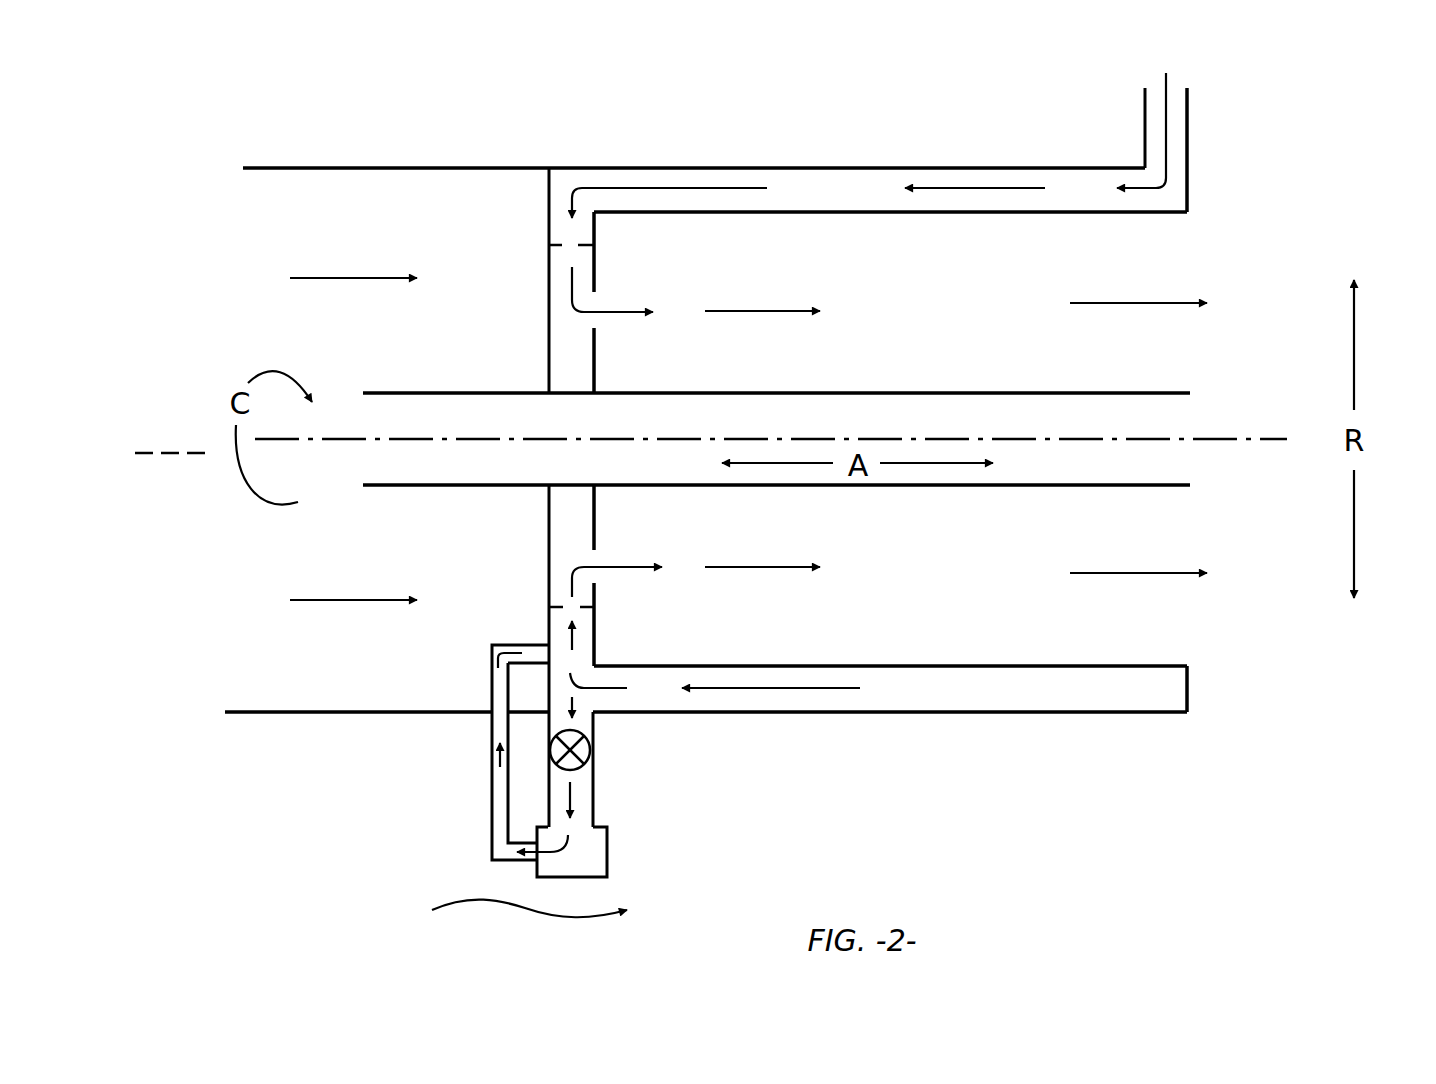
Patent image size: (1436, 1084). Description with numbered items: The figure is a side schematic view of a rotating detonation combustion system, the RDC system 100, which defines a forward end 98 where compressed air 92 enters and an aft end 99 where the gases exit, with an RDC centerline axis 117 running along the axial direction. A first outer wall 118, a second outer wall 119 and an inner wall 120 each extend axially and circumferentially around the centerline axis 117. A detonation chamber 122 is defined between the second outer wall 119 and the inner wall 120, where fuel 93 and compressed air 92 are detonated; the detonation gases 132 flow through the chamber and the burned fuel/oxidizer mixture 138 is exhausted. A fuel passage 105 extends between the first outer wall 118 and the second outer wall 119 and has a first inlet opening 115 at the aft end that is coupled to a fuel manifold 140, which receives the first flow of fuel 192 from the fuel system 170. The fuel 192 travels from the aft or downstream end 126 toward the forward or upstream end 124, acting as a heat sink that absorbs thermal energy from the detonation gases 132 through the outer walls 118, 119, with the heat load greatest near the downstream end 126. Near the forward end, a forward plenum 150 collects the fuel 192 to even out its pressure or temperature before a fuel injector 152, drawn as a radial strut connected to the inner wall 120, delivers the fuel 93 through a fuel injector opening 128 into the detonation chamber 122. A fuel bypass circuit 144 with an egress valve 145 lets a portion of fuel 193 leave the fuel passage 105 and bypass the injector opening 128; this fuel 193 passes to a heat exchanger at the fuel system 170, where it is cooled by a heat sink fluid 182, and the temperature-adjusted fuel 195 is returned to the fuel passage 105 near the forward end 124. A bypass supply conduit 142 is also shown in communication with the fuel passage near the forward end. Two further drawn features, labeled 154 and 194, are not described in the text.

The RDC system 100 is at (605, 116).
The compressed air 92 is at (337, 278).
The flow of fuel 93 is at (620, 567).
The forward end 98 is at (150, 369).
The aft end 99 is at (1400, 378).
The fuel passage 105 is at (808, 204).
The first inlet opening 115 is at (1173, 182).
The RDC centerline axis 117 is at (1227, 438).
The first outer wall 118 is at (773, 168).
The second outer wall 119 is at (907, 213).
The inner wall 120 is at (837, 393).
The detonation chamber 122 is at (925, 313).
The forward or upstream end 124 is at (601, 275).
The aft or downstream end 126 is at (1192, 227).
The fuel injector opening 128 is at (598, 322).
The detonation gases 132 is at (742, 311).
The burned fuel/oxidizer mixture 138 is at (1107, 300).
The fuel manifold 140 is at (1192, 125).
The bypass supply conduit 142 is at (490, 787).
The fuel bypass circuit 144 is at (595, 773).
The egress valve 145 is at (595, 725).
The forward plenum 150 is at (552, 218).
The fuel injector 152 is at (560, 319).
The partition 154 is at (548, 348).
The fuel system 170 is at (607, 853).
The heat sink fluid 182 is at (520, 913).
The first flow of fuel 192 is at (1145, 103).
The bypassed flow of fuel 193 is at (580, 788).
The pump intake flow 194 is at (573, 667).
The temperature-adjusted flow of fuel 195 is at (555, 653).